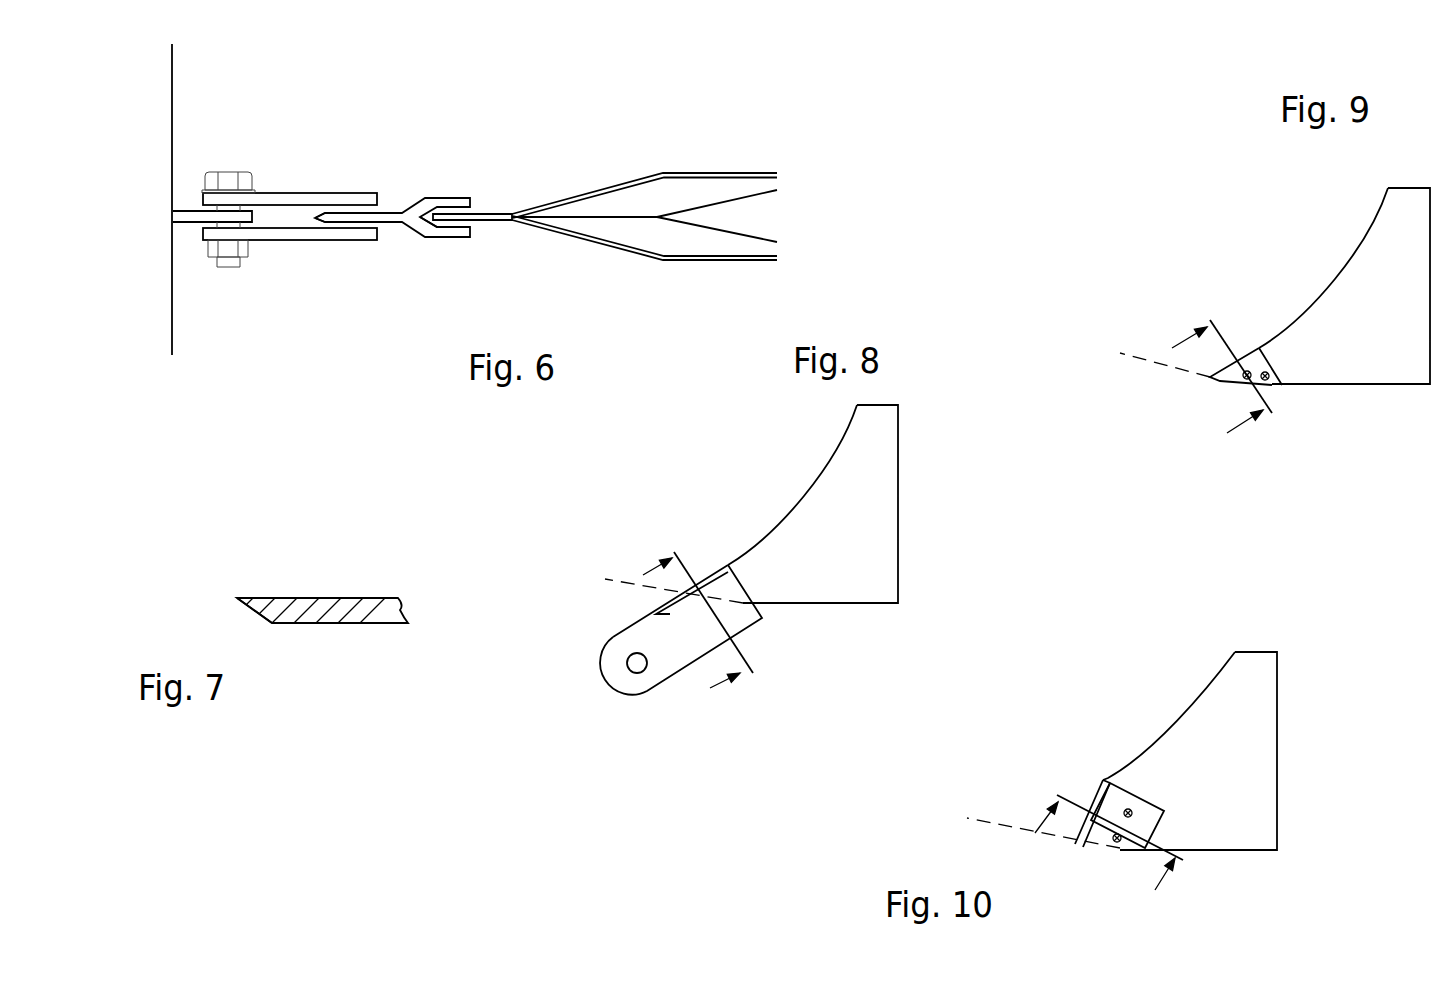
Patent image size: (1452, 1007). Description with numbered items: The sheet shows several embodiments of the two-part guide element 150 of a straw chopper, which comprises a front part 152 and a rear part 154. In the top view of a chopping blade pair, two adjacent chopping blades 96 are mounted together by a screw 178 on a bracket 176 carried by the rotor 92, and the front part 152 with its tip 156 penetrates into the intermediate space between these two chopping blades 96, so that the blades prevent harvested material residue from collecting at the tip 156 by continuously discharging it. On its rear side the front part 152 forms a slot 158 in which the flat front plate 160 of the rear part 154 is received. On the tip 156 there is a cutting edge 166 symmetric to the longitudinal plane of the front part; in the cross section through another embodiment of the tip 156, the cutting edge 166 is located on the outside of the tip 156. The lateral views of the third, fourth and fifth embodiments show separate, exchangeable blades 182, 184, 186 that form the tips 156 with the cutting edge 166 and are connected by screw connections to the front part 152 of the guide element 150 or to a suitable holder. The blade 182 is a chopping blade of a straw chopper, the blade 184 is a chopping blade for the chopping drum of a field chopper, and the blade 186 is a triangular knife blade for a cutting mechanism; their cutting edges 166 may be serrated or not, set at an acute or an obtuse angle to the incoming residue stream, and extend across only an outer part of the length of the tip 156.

In FIG. 6, the rotor 92 is at (172, 150).
In FIG. 6, the chopping blades 96 is at (325, 202).
In FIG. 6, the guide element 150 is at (490, 213).
In FIG. 8, the guide element 150 is at (817, 573).
In FIG. 9, the guide element 150 is at (1280, 321).
In FIG. 10, the guide element 150 is at (1189, 790).
In FIG. 6, the front part 152 is at (447, 198).
In FIG. 7, the front part 152 is at (347, 613).
In FIG. 8, the front part 152 is at (812, 570).
In FIG. 9, the front part 152 is at (1368, 348).
In FIG. 10, the front part 152 is at (1252, 817).
In FIG. 6, the rear part 154 is at (738, 175).
In FIG. 6, the tip 156 is at (274, 168).
In FIG. 7, the tip 156 is at (209, 570).
In FIG. 8, the tip 156 is at (680, 536).
In FIG. 9, the tip 156 is at (1255, 311).
In FIG. 10, the tip 156 is at (1072, 764).
In FIG. 6, the slot 158 is at (467, 224).
In FIG. 6, the front plate 160 is at (492, 215).
In FIG. 6, the cutting edge 166 is at (315, 218).
In FIG. 7, the cutting edge 166 is at (237, 598).
In FIG. 8, the cutting edge 166 is at (718, 577).
In FIG. 9, the cutting edge 166 is at (1243, 357).
In FIG. 10, the cutting edge 166 is at (1095, 807).
In FIG. 6, the bracket 176 is at (185, 218).
In FIG. 6, the screw 178 is at (227, 267).
In FIG. 8, the blade 182 is at (653, 672).
In FIG. 9, the blade 184 is at (1257, 380).
In FIG. 10, the blade 186 is at (1098, 833).